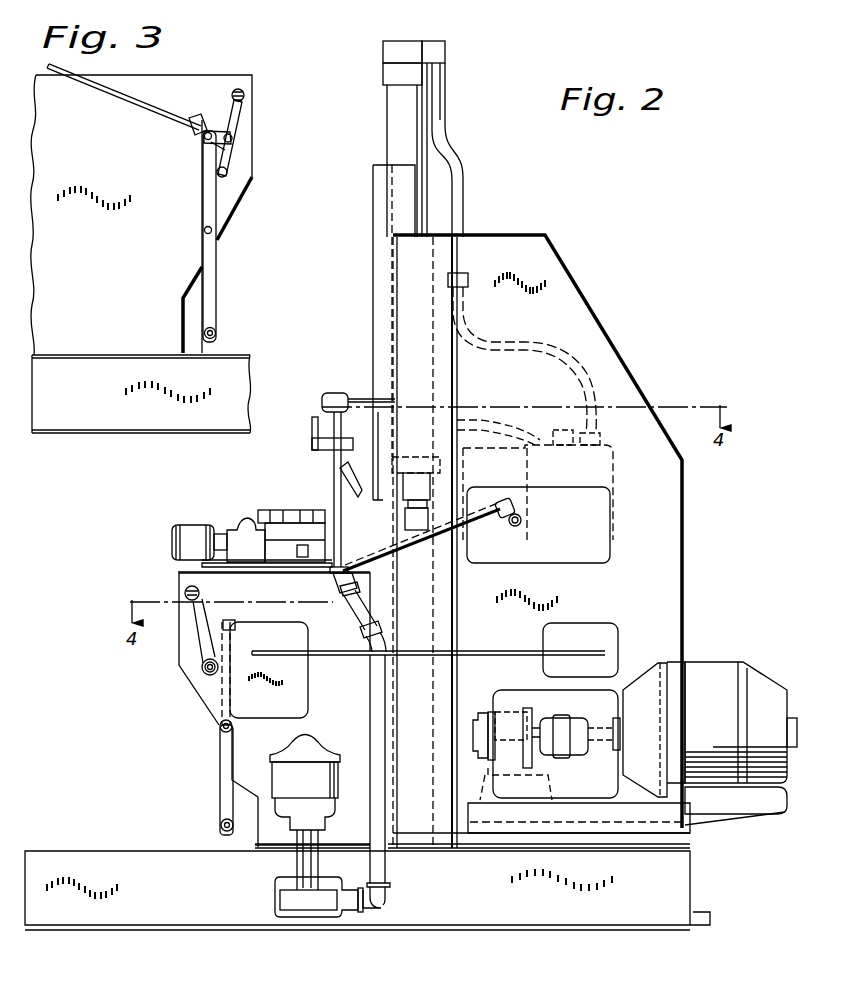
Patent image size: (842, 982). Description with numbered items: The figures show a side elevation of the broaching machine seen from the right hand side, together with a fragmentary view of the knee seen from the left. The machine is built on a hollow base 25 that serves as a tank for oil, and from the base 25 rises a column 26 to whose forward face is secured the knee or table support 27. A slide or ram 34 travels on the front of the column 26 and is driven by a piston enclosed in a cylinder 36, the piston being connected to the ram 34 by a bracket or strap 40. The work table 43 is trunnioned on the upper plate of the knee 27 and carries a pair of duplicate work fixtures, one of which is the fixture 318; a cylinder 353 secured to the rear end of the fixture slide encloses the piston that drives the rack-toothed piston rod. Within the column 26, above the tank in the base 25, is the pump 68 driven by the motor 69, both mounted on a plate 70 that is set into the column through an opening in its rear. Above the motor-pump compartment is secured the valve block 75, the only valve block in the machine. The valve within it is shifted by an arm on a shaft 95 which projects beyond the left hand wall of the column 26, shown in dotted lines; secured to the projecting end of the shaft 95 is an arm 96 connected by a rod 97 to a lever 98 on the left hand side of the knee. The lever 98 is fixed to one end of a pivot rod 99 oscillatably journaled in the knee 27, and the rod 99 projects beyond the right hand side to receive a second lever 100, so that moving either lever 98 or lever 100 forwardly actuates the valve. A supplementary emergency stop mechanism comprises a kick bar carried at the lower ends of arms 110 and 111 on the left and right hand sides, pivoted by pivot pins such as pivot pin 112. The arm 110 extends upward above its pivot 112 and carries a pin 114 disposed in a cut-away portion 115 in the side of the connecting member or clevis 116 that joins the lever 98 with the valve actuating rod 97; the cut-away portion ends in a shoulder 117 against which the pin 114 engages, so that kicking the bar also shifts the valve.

In FIG. 3, the base 25 is at (225, 360).
In FIG. 2, the base 25 is at (175, 915).
In FIG. 2, the column 26 is at (682, 565).
In FIG. 3, the knee or table support 27 is at (228, 205).
In FIG. 2, the knee or table support 27 is at (205, 700).
In FIG. 2, the ram 34 is at (375, 185).
In FIG. 2, the cylinder 36 is at (389, 109).
In FIG. 2, the bracket or strap 40 is at (430, 505).
In FIG. 2, the table 43 is at (202, 570).
In FIG. 2, the pump 68 is at (487, 712).
In FIG. 2, the motor 69 is at (720, 673).
In FIG. 2, the plate 70 is at (772, 805).
In FIG. 2, the valve block 75 is at (675, 463).
In FIG. 2, the shaft 95 is at (522, 520).
In FIG. 2, the arm 96 is at (518, 510).
In FIG. 3, the rod 97 is at (150, 116).
In FIG. 2, the rod 97 is at (441, 545).
In FIG. 3, the lever 98 is at (243, 116).
In FIG. 3, the pivot rod 99 is at (230, 172).
In FIG. 2, the second lever 100 is at (202, 657).
In FIG. 3, the arm 110 is at (217, 262).
In FIG. 2, the arm 111 is at (224, 770).
In FIG. 3, the pivot pin 112 is at (215, 233).
In FIG. 3, the pin 114 is at (222, 133).
In FIG. 3, the cut-away portion 115 is at (201, 139).
In FIG. 3, the connecting member or clevis 116 is at (233, 138).
In FIG. 3, the shoulder 117 is at (211, 153).
In FIG. 2, the work fixture 318 is at (237, 523).
In FIG. 2, the cylinder 353 is at (202, 564).